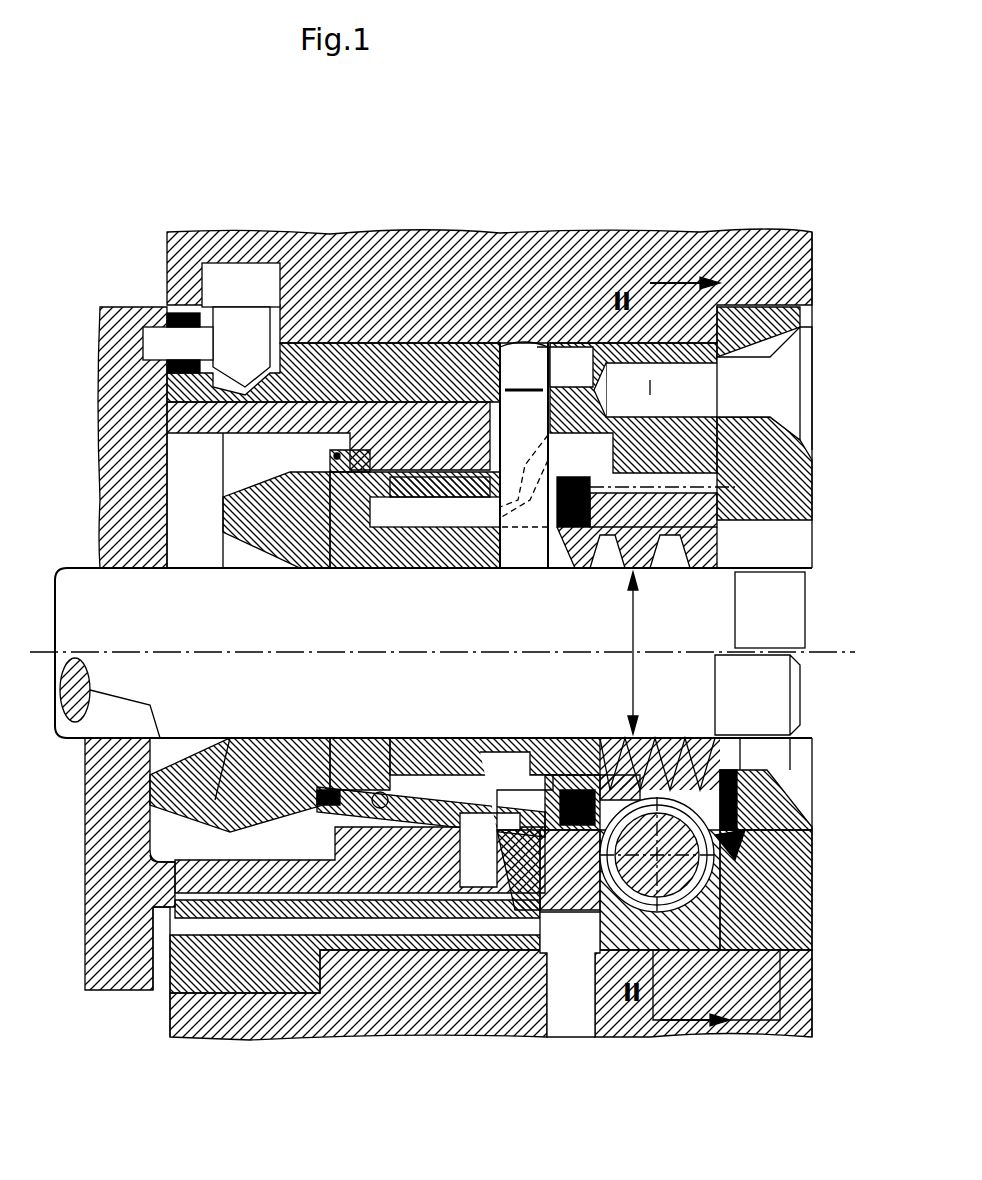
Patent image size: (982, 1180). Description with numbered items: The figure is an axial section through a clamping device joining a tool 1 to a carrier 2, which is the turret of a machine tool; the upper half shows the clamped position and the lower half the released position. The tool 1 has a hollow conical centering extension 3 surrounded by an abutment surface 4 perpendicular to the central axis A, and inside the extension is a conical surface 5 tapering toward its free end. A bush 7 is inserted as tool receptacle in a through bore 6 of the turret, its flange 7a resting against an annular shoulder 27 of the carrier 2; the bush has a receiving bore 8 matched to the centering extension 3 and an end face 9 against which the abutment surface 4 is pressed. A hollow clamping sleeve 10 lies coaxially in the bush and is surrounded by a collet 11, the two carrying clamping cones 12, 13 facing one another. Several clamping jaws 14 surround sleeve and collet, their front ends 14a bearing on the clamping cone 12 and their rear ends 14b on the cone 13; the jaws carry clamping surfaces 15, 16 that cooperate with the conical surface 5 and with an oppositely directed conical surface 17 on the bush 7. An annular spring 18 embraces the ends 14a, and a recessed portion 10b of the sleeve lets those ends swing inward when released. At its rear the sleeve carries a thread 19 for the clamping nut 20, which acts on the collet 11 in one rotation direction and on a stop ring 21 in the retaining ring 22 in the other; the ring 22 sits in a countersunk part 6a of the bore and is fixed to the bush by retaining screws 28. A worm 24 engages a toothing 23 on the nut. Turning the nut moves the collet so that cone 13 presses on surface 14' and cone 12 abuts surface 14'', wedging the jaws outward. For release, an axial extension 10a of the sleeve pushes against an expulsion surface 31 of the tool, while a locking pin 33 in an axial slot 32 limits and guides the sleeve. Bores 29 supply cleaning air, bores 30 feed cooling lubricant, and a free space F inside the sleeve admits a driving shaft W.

The tool 1 is at (133, 540).
The carrier 2 is at (390, 232).
The centering extension 3 is at (182, 430).
The abutment surface 4 is at (157, 957).
The conical surface 5 is at (267, 757).
The through bore 6 is at (577, 343).
The countersunk part 6a is at (777, 1033).
The bush 7 is at (457, 350).
The flange 7a is at (223, 1000).
The receiving bore 8 is at (243, 433).
The end face 9 is at (160, 960).
The clamping sleeve 10 is at (303, 520).
The axial extension 10a is at (172, 740).
The recessed portion 10b is at (460, 740).
The collet 11 is at (550, 553).
The clamping cone 12 is at (237, 753).
The clamping cone 13 is at (560, 760).
The clamping jaws 14 is at (410, 538).
The front end 14a is at (303, 735).
The rear end 14b is at (625, 762).
The surface 14' is at (560, 760).
The surface 14'' is at (362, 734).
The clamping surface 15 is at (410, 778).
The clamping surface 16 is at (483, 775).
The conical surface 17 is at (540, 748).
The annular spring 18 is at (333, 765).
The thread 19 is at (594, 760).
The clamping nut 20 is at (603, 556).
The stop ring 21 is at (745, 773).
The retaining ring 22 is at (770, 963).
The toothing 23 is at (735, 852).
The worm 24 is at (700, 882).
The annular shoulder 27 is at (310, 985).
The retaining screws 28 is at (785, 393).
The bores 29 is at (560, 948).
The bores 30 is at (258, 327).
The expulsion surface 31 is at (75, 722).
The axial slot 32 is at (523, 560).
The locking pin 33 is at (498, 515).
The central axis A is at (817, 648).
The free space F is at (633, 653).
The driving shaft W is at (763, 703).